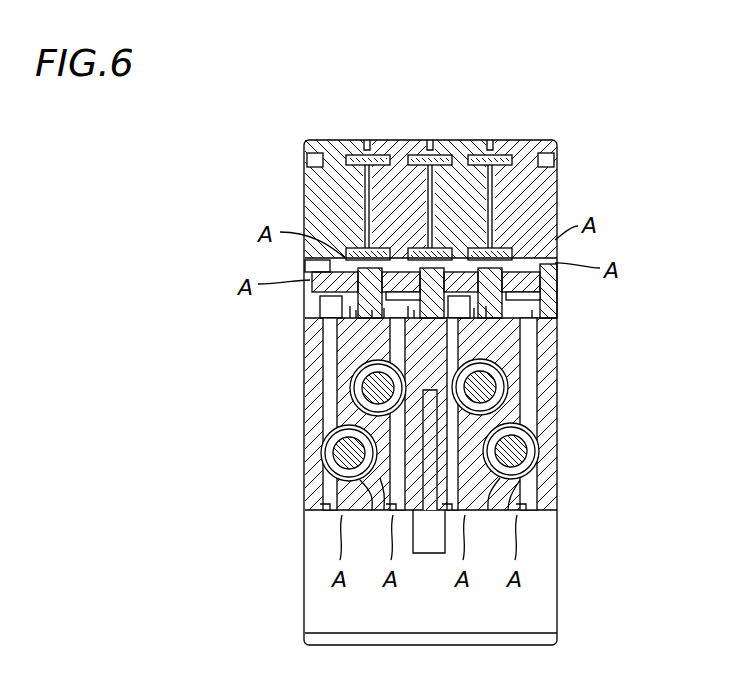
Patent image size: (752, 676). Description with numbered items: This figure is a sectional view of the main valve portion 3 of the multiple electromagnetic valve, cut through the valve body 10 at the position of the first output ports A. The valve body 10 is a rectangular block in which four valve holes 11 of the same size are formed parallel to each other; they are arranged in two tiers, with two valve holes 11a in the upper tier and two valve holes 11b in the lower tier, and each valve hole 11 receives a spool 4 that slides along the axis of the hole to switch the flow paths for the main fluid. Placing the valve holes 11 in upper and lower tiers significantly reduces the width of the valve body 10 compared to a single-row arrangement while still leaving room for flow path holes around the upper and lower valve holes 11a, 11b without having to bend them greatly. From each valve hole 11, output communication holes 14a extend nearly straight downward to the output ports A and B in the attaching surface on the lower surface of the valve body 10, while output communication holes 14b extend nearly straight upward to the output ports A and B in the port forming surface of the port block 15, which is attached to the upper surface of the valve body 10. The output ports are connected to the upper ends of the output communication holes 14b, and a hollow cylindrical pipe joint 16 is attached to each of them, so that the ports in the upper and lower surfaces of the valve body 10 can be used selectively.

The main valve portion 3 is at (580, 136).
The spool 4 is at (540, 425).
The valve body 10 is at (555, 505).
The valve hole 11 is at (425, 447).
The upper-tier valve hole 11a is at (330, 400).
The lower-tier valve hole 11b is at (330, 488).
The output communication hole 14a is at (325, 452).
The output communication hole 14b is at (340, 374).
The port block 15 is at (557, 312).
The pipe joint 16 is at (452, 150).